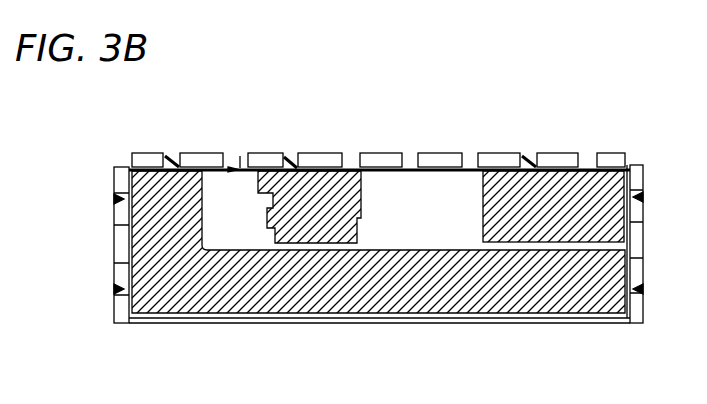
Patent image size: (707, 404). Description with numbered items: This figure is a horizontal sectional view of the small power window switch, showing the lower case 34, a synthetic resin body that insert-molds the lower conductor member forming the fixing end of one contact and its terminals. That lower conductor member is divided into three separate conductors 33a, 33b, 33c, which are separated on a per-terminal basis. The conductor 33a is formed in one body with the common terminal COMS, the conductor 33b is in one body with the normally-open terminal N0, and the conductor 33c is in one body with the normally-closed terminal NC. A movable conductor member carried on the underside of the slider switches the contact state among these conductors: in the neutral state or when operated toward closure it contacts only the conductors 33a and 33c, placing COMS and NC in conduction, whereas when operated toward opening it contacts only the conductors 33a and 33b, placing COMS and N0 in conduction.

The conductor 33a is at (398, 282).
The conductor 33b is at (345, 177).
The conductor 33c is at (586, 178).
The lower case 34 is at (586, 323).
The COMS terminal COMS is at (171, 153).
The NO terminal N0 is at (292, 156).
The NC terminal NC is at (528, 166).